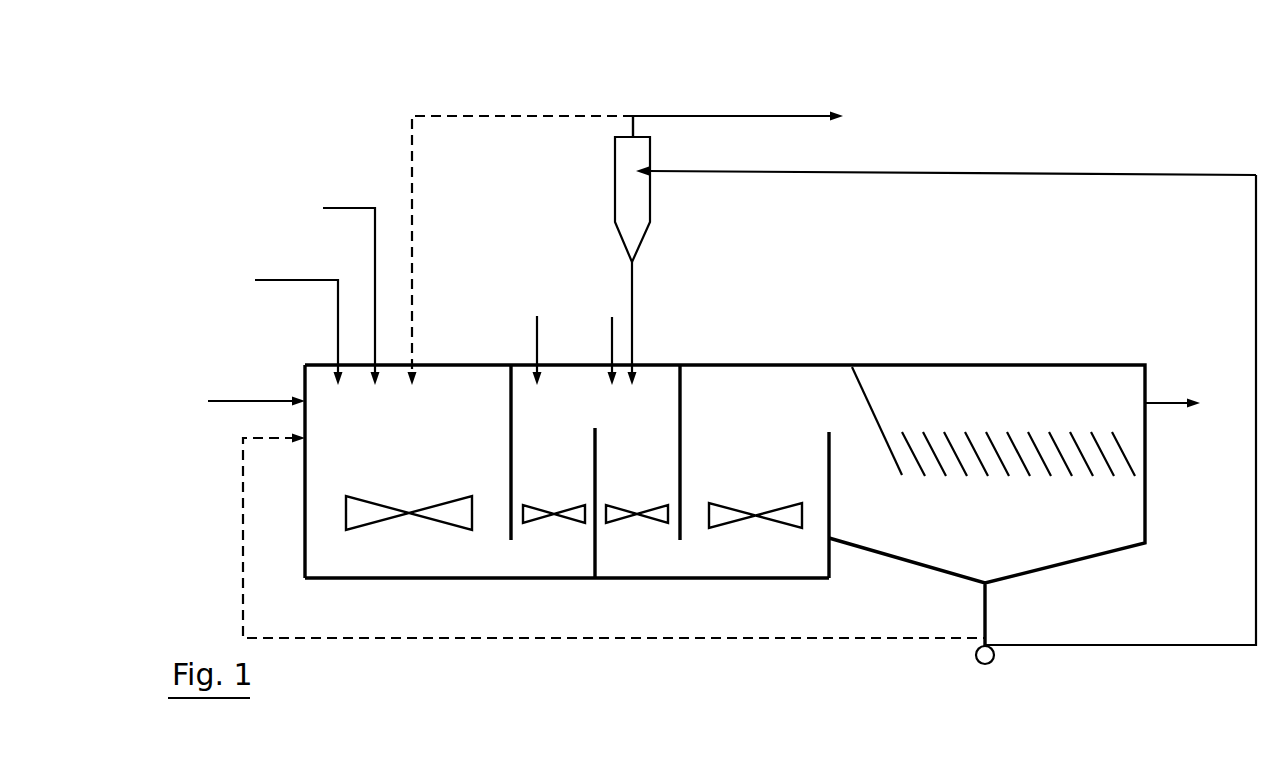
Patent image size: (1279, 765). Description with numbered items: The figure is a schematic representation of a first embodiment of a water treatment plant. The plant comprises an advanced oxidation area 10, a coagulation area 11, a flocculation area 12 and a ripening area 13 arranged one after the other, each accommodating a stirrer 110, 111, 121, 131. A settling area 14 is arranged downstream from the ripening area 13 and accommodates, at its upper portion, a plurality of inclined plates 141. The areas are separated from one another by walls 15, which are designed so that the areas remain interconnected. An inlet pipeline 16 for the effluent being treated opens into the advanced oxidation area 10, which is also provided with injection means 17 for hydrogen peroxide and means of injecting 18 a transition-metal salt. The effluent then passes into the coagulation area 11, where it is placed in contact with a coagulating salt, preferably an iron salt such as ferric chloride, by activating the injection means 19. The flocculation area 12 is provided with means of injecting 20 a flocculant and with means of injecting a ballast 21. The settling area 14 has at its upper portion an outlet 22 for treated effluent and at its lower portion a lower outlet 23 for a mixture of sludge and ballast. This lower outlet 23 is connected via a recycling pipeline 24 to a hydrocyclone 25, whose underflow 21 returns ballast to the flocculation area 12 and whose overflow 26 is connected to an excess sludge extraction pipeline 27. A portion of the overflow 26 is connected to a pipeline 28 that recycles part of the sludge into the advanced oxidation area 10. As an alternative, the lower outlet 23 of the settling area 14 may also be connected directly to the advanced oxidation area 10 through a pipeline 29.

The advanced oxidation area 10 is at (395, 486).
The coagulation area 11 is at (535, 486).
The flocculation area 12 is at (619, 486).
The ripening area 13 is at (736, 486).
The settling area 14 is at (960, 527).
The inclined plates 141 is at (1121, 452).
The walls 15 is at (510, 502).
The inlet pipeline 16 is at (250, 401).
The injection means for hydrogen peroxide 17 is at (290, 280).
The means of injecting a transition-metal salt 18 is at (350, 208).
The injection means for coagulating salt 19 is at (537, 338).
The means of injecting a flocculant 20 is at (612, 330).
The ballast injection means / hydrocyclone underflow 21 is at (633, 303).
The outlet for treated effluent 22 is at (1167, 405).
The lower outlet 23 is at (985, 620).
The recycling pipeline 24 is at (1035, 175).
The hydrocyclone 25 is at (615, 202).
The overflow 26 is at (635, 127).
The excess sludge extraction pipeline 27 is at (763, 117).
The sludge recycling pipeline 28 is at (470, 117).
The pipeline 29 is at (243, 562).
The stirrer 110 is at (367, 517).
The stirrer 111 is at (535, 520).
The stirrer 121 is at (660, 528).
The stirrer 131 is at (787, 520).